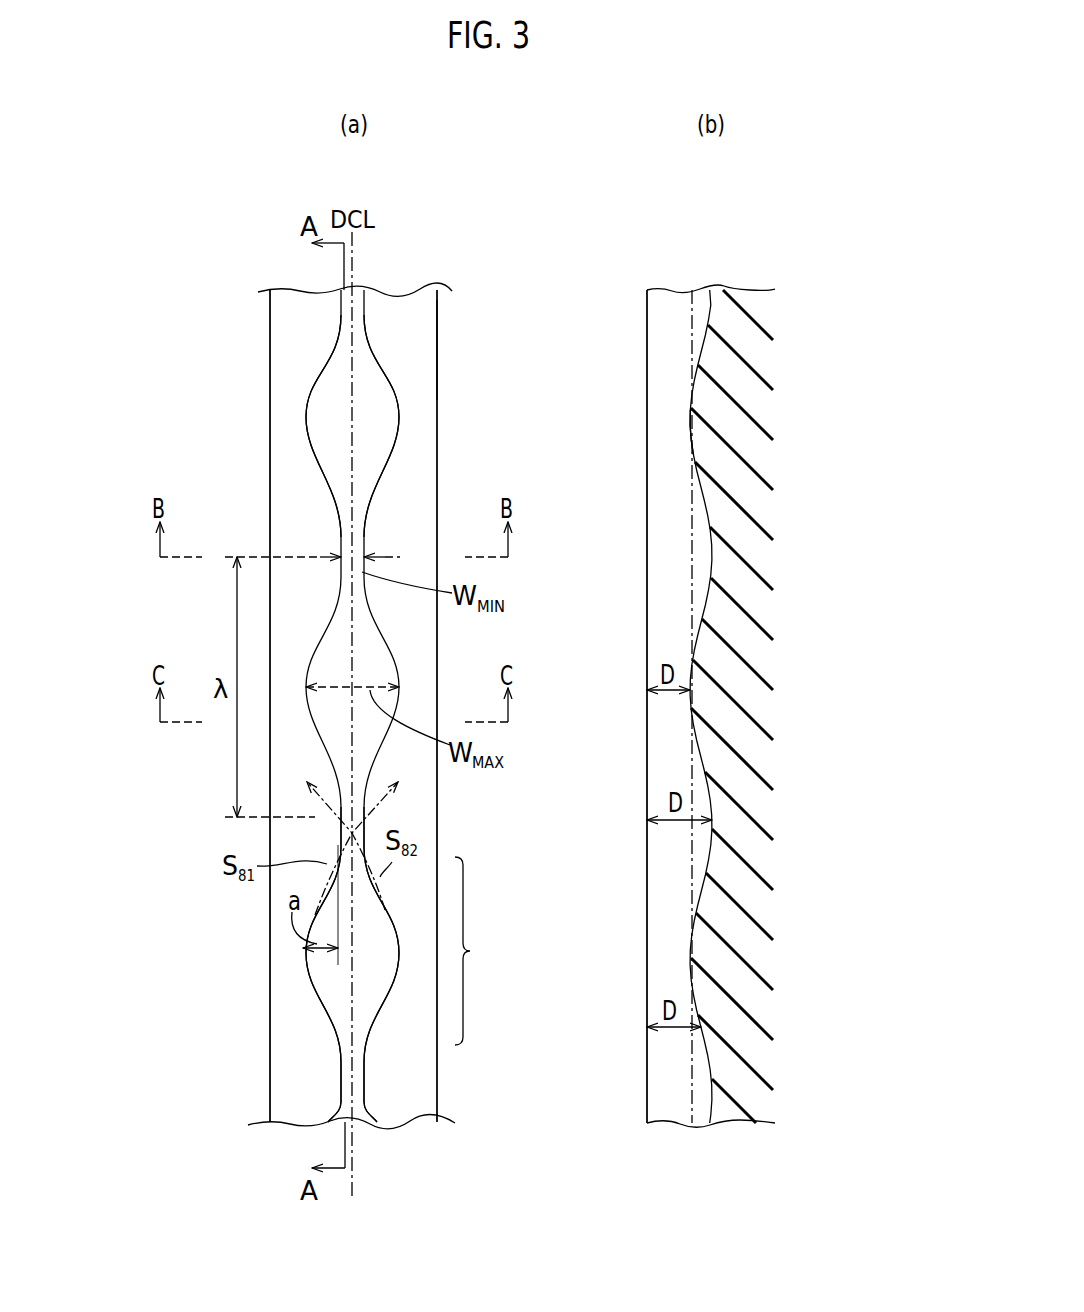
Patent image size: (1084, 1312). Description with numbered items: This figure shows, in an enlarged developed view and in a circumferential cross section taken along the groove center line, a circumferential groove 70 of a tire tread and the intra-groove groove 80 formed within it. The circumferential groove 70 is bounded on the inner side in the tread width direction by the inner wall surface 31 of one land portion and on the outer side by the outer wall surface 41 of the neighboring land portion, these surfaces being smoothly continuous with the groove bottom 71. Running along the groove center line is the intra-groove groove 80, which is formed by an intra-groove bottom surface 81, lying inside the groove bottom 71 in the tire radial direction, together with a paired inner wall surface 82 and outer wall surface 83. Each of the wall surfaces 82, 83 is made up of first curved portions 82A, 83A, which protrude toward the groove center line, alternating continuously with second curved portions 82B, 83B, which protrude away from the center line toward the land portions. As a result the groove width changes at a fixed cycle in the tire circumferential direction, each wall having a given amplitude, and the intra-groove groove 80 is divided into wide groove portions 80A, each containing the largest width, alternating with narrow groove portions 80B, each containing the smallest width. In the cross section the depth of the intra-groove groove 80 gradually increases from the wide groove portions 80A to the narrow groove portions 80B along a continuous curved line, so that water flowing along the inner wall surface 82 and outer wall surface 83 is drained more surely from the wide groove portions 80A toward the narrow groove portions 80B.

The inner wall surface 31 is at (270, 322).
The outer wall surface 41 is at (438, 345).
The circumferential groove 70 is at (417, 275).
The groove bottom 71 is at (418, 313).
The intra-groove groove 80 is at (218, 378).
The intra-groove bottom surface 81 is at (331, 459).
The inner wall surface 82 is at (313, 393).
The first curved portion 82A is at (340, 1046).
The second curved portion 82B is at (312, 988).
The outer wall surface 83 is at (399, 430).
The first curved portion 83A is at (368, 1052).
The second curved portion 83B is at (388, 1016).
The wide groove portion 80A is at (640, 598).
The narrow groove portion 80B is at (455, 783).